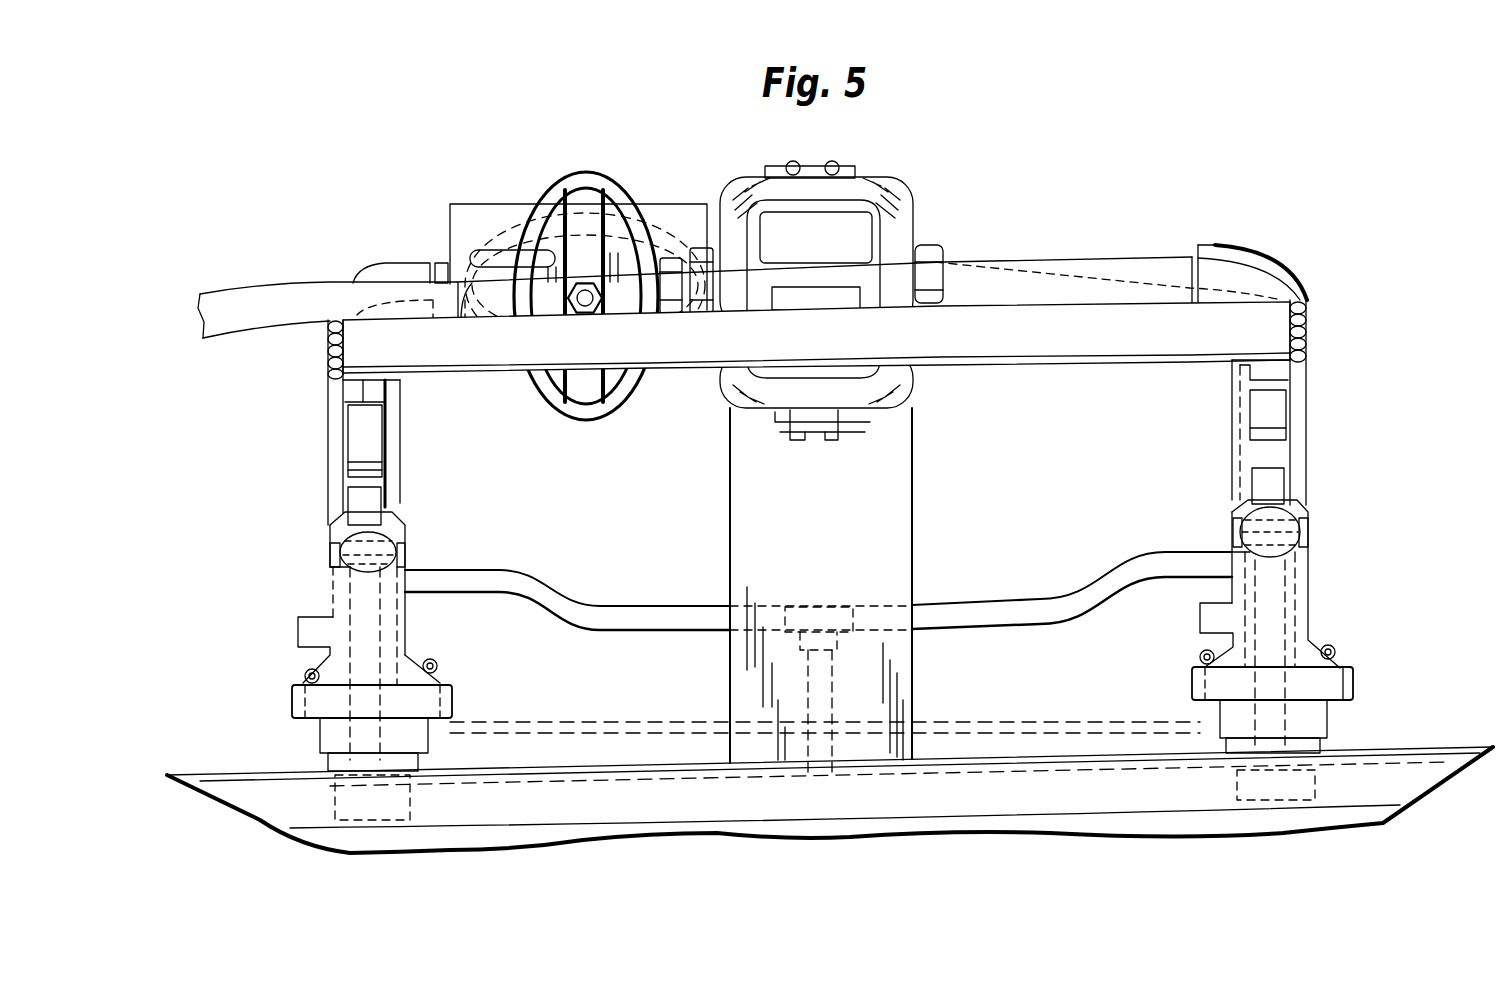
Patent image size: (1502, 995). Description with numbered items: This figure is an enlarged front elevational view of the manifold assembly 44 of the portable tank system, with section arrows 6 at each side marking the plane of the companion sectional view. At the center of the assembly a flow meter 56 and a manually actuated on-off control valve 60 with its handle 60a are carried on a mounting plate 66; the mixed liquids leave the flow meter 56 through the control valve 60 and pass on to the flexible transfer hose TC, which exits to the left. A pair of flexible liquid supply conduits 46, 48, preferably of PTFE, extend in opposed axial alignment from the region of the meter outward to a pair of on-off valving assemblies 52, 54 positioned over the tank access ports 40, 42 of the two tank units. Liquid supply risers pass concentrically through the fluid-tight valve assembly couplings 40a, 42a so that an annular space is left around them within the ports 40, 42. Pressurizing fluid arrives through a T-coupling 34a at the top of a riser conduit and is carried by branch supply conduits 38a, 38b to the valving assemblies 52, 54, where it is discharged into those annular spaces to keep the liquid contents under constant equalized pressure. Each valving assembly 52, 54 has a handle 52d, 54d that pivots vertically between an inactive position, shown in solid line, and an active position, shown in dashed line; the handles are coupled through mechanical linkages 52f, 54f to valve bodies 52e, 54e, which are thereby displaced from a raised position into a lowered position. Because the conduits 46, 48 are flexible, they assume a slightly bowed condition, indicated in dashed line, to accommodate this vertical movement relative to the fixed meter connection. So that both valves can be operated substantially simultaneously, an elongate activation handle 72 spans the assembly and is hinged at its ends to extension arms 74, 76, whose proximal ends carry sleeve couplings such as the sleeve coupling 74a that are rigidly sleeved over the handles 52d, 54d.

The section line for Fig. 6 is at (320, 168).
The manifold assembly 44 is at (1058, 139).
The on-off control valve 60 is at (560, 256).
The handle 60a is at (598, 186).
The flexible transfer hose TC is at (293, 315).
The liquid supply conduit 46 is at (438, 270).
The liquid supply conduit 48 is at (1142, 266).
The flow meter 56 is at (893, 195).
The activation handle 72 is at (862, 343).
The mounting plate 66 is at (870, 477).
The T-coupling 34a is at (800, 606).
The extension arm 74 is at (326, 392).
The sleeve coupling 74a is at (400, 432).
The handle 52d is at (340, 450).
The valve body 52e is at (385, 552).
The on-off valving assembly 52 is at (325, 610).
The mechanical linkage 52f is at (305, 673).
The valve assembly coupling 40a is at (322, 736).
The extension arm 76 is at (1300, 372).
The handle 54d is at (1270, 422).
The valve body 54e is at (1242, 530).
The on-off valving assembly 54 is at (1318, 586).
The mechanical linkage 54f is at (1335, 650).
The valve assembly coupling 42a is at (1330, 724).
The branch supply conduit 38a is at (565, 603).
The branch supply conduit 38b is at (1042, 600).
The tank access port 40 is at (315, 770).
The tank access port 42 is at (1323, 743).